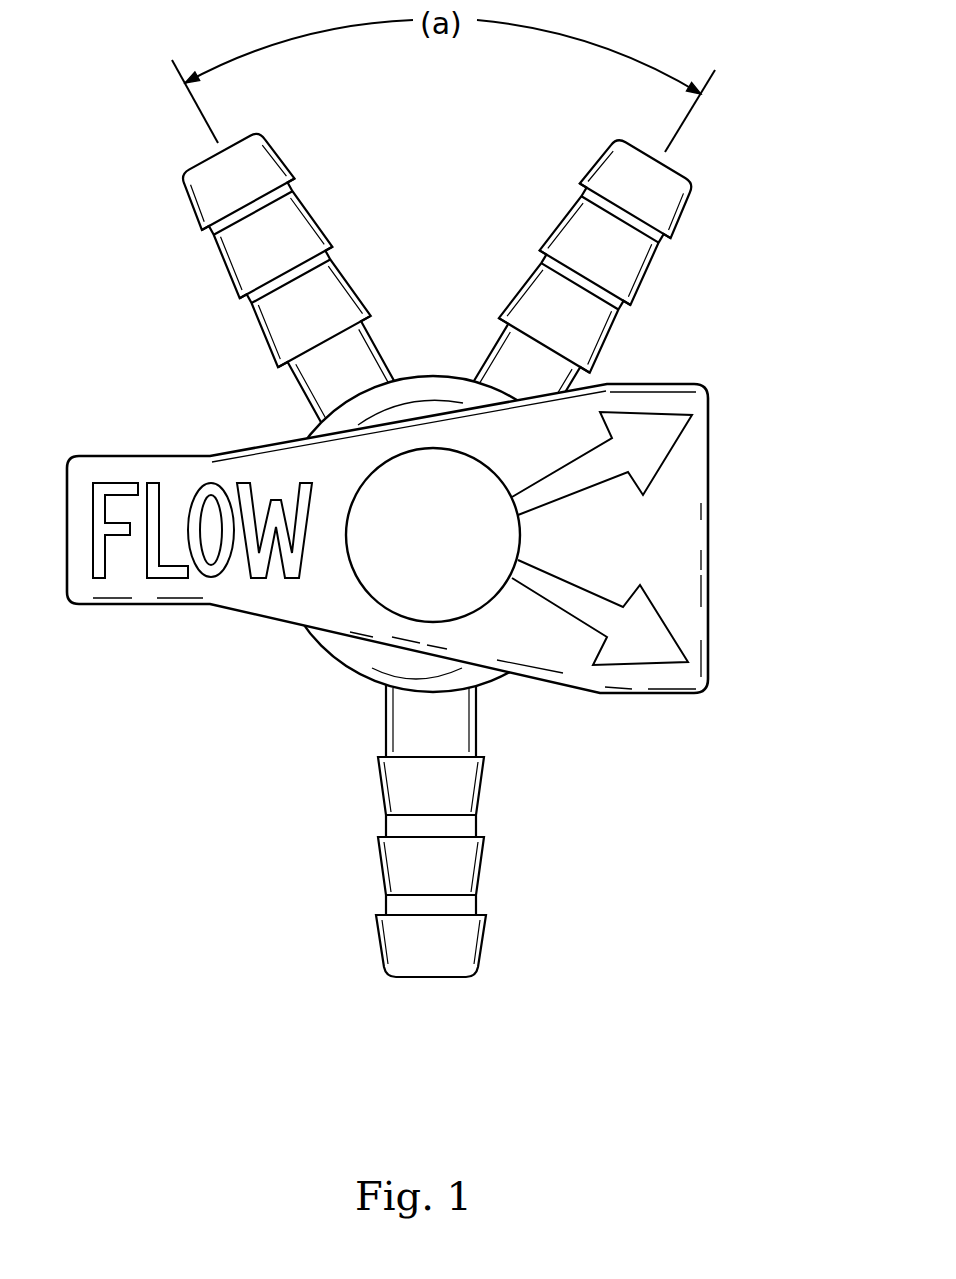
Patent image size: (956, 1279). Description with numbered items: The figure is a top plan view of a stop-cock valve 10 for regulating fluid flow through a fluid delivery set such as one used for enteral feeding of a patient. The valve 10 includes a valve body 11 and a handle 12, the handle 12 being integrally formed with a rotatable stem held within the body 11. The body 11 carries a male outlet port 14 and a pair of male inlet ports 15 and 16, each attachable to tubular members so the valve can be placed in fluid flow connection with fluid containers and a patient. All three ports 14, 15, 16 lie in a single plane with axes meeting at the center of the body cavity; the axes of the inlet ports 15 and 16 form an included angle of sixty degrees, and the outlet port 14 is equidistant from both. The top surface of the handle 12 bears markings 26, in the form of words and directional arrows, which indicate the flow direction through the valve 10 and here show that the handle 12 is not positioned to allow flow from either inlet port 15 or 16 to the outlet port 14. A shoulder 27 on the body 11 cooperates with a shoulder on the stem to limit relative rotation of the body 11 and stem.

The stop-cock valve 10 is at (443, 552).
The valve body 11 is at (347, 680).
The handle 12 is at (660, 550).
The male outlet port 14 is at (452, 877).
The male inlet port 15 is at (582, 204).
The male inlet port 16 is at (298, 208).
The markings 26 is at (124, 488).
The shoulder 27 is at (438, 385).